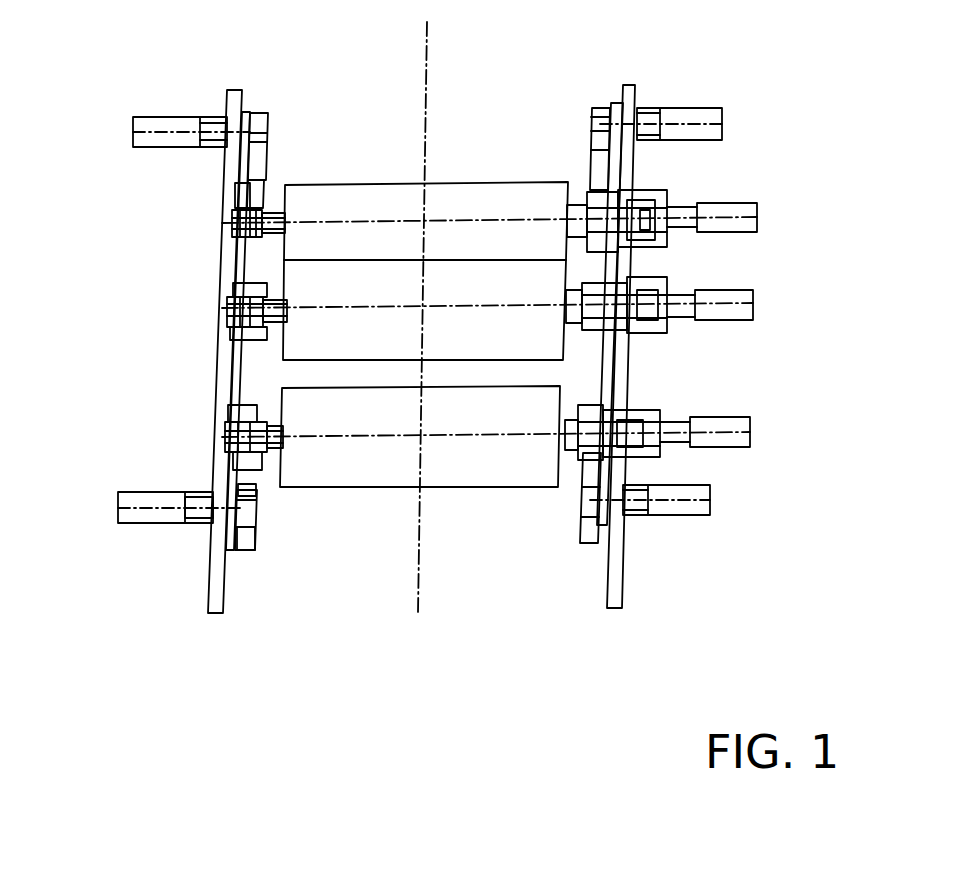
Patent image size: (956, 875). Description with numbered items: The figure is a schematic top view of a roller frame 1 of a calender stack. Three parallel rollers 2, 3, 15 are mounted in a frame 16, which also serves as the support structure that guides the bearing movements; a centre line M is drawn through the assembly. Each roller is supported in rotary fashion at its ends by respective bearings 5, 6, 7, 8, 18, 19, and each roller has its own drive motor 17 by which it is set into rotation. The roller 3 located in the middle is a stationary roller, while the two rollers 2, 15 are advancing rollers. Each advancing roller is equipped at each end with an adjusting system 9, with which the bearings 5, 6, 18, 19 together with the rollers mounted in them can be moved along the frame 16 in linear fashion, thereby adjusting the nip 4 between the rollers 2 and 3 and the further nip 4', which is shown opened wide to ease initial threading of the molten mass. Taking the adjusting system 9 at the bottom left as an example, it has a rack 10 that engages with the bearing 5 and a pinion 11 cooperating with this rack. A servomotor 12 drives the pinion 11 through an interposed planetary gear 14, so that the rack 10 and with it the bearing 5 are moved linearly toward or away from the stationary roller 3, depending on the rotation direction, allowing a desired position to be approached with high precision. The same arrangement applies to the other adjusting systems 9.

The roller frame 1 is at (208, 662).
The roller 2 is at (353, 430).
The roller 3 is at (356, 304).
The nip 4 is at (186, 351).
The nip 4' is at (635, 346).
The bearing 5 is at (233, 410).
The bearing 6 is at (602, 400).
The bearing 7 is at (227, 298).
The bearing 8 is at (612, 272).
The adjusting system 9 is at (282, 142).
The rack 10 is at (243, 550).
The pinion 11 is at (253, 500).
The servomotor 12 is at (160, 510).
The planetary gear 14 is at (200, 518).
The roller 15 is at (361, 219).
The frame 16 is at (232, 172).
The drive motor 17 is at (740, 218).
The bearing 18 is at (237, 202).
The bearing 19 is at (612, 194).
The centre plane M is at (420, 595).